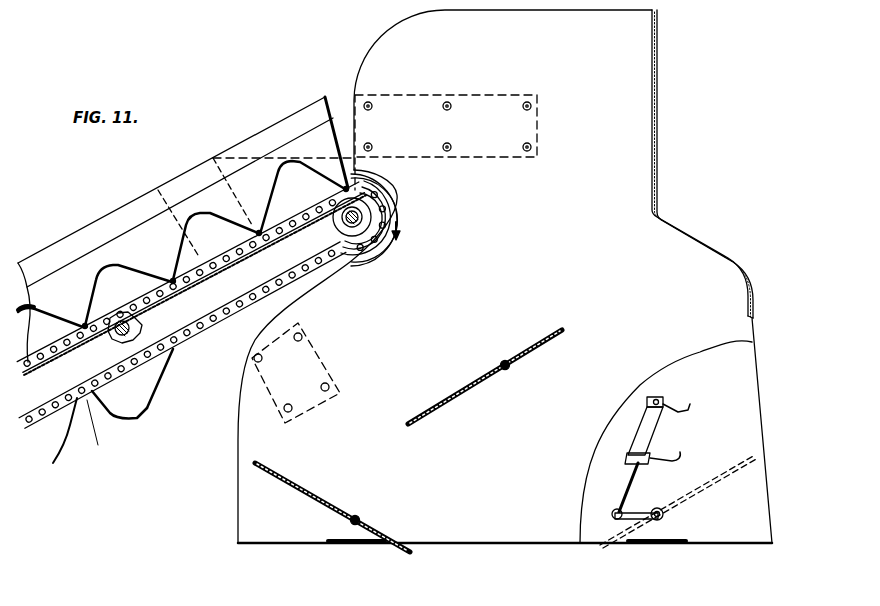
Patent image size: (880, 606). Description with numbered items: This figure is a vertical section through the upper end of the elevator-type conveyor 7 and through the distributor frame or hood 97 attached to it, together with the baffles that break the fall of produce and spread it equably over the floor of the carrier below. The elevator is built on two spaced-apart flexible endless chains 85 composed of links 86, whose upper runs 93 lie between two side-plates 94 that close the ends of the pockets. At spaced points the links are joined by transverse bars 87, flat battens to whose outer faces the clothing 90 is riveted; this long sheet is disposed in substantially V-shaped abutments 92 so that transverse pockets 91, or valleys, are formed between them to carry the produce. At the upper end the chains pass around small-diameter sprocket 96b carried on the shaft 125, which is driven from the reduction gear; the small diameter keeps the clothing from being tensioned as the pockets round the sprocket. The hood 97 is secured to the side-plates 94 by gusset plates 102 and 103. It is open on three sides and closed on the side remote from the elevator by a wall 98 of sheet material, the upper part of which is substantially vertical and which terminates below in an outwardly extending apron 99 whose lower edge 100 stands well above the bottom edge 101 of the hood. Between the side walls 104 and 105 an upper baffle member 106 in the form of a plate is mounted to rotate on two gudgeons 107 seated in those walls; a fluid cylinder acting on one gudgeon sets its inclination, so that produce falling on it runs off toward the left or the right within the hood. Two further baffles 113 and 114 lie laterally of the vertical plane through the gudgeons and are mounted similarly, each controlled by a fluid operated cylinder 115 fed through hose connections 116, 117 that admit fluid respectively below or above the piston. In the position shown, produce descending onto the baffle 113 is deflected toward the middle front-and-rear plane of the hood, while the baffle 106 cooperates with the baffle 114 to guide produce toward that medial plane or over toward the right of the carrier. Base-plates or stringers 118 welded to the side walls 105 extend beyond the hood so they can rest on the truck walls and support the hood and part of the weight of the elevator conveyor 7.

The elevator-type conveyor 7 is at (77, 225).
The flexible endless belts or chains 85 is at (60, 397).
The links 86 is at (110, 348).
The transverse bars 87 is at (87, 323).
The clothing 90 is at (137, 421).
The pockets 91 is at (82, 278).
The abutments 92 is at (80, 430).
The upper runs 93 is at (220, 256).
The side-plates 94 is at (284, 196).
The sprocket 96b is at (388, 252).
The distributor frame or hood 97 is at (624, 201).
The wall 98 is at (657, 140).
The apron 99 is at (743, 262).
The lower edge 100 is at (752, 322).
The bottom edge 101 is at (542, 543).
The gusset plate 102 is at (345, 100).
The gusset plate 103 is at (258, 340).
The side wall 104 is at (740, 364).
The side wall 105 is at (551, 253).
The upper baffle member 106 is at (463, 390).
The trunnions or gudgeons 107 is at (505, 362).
The baffle 113 is at (320, 497).
The baffle 114 is at (698, 492).
The fluid operated cylinder 115 is at (662, 432).
The hose connection 116 is at (668, 464).
The hose connection 117 is at (690, 406).
The base-plates or stringers 118 is at (347, 546).
The shaft 125 is at (378, 204).